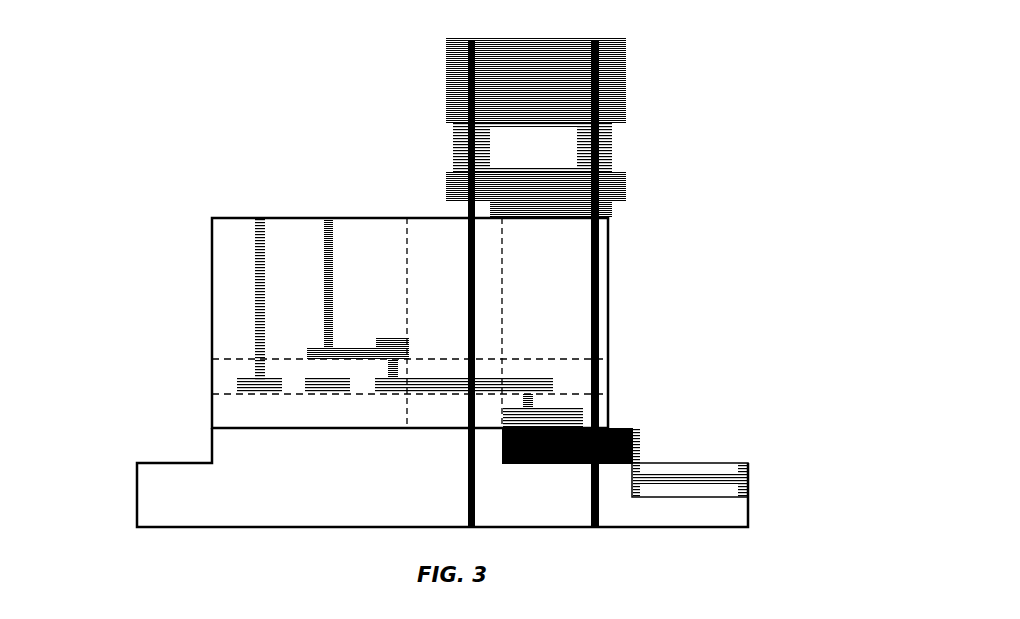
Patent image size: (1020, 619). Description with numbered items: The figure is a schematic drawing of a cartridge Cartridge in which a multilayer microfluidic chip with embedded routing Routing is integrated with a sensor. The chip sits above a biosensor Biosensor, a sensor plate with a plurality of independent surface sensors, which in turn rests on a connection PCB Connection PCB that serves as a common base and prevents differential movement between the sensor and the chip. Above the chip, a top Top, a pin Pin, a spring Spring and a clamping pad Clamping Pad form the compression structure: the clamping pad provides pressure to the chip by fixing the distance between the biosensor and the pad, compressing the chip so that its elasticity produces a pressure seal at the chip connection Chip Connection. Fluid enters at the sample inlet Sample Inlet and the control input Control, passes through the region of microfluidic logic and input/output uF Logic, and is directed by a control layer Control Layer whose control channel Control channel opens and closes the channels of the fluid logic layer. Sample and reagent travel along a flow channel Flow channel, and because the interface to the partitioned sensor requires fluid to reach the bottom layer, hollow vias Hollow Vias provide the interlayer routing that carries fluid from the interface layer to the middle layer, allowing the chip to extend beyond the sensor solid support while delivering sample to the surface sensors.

The top Top is at (628, 52).
The pin Pin is at (601, 90).
The spring Spring is at (613, 138).
The clamping pad Clamping Pad is at (627, 186).
The chip connection Chip Connection is at (666, 240).
The biosensor / sensor plate Biosensor is at (608, 427).
The connection PCB Connection PCB is at (655, 459).
The cartridge Cartridge is at (136, 488).
The control channel Control channel is at (257, 382).
The flow channel Flow channel is at (512, 422).
The hollow vias Hollow Vias is at (522, 404).
The control Control is at (259, 216).
The sample inlet Sample Inlet is at (329, 216).
The routing Routing is at (430, 216).
The microfluidic logic and I/O uF Logic is at (296, 216).
The control layer Control Layer is at (212, 370).